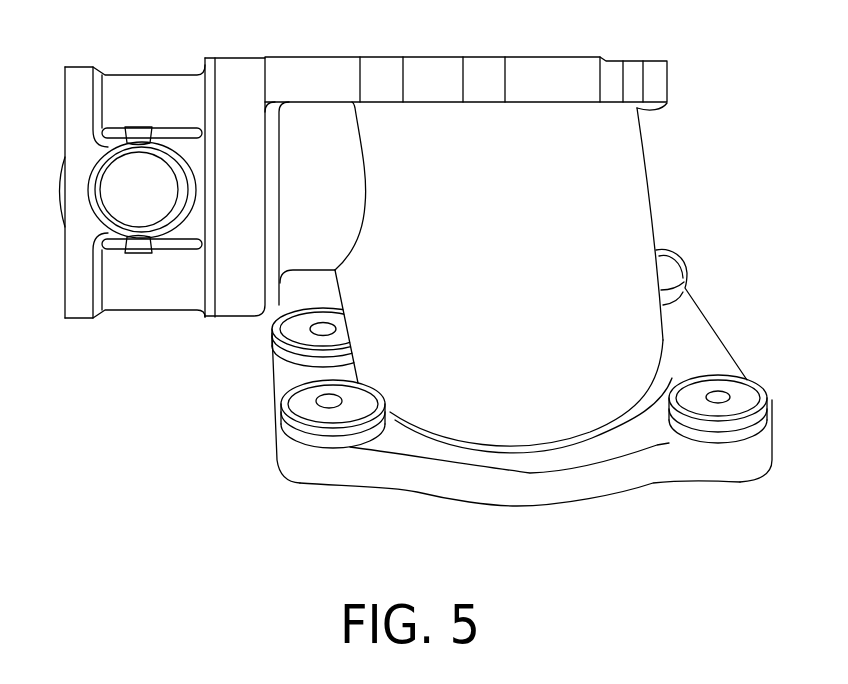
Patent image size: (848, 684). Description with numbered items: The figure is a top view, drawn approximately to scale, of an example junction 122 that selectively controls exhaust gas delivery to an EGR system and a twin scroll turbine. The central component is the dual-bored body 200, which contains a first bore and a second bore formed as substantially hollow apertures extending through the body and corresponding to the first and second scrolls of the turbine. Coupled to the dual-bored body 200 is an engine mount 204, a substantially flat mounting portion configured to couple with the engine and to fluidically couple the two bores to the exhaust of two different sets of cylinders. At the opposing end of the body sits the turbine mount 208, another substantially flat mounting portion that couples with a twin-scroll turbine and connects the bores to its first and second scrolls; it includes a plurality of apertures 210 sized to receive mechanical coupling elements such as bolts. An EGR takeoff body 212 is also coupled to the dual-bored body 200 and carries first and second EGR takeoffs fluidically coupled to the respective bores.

The junction 122 is at (573, 570).
The dual-bored body 200 is at (555, 240).
The engine mount 204 is at (668, 73).
The turbine mount 208 is at (417, 492).
The apertures 210 is at (323, 328).
The EGR takeoff body 212 is at (142, 343).